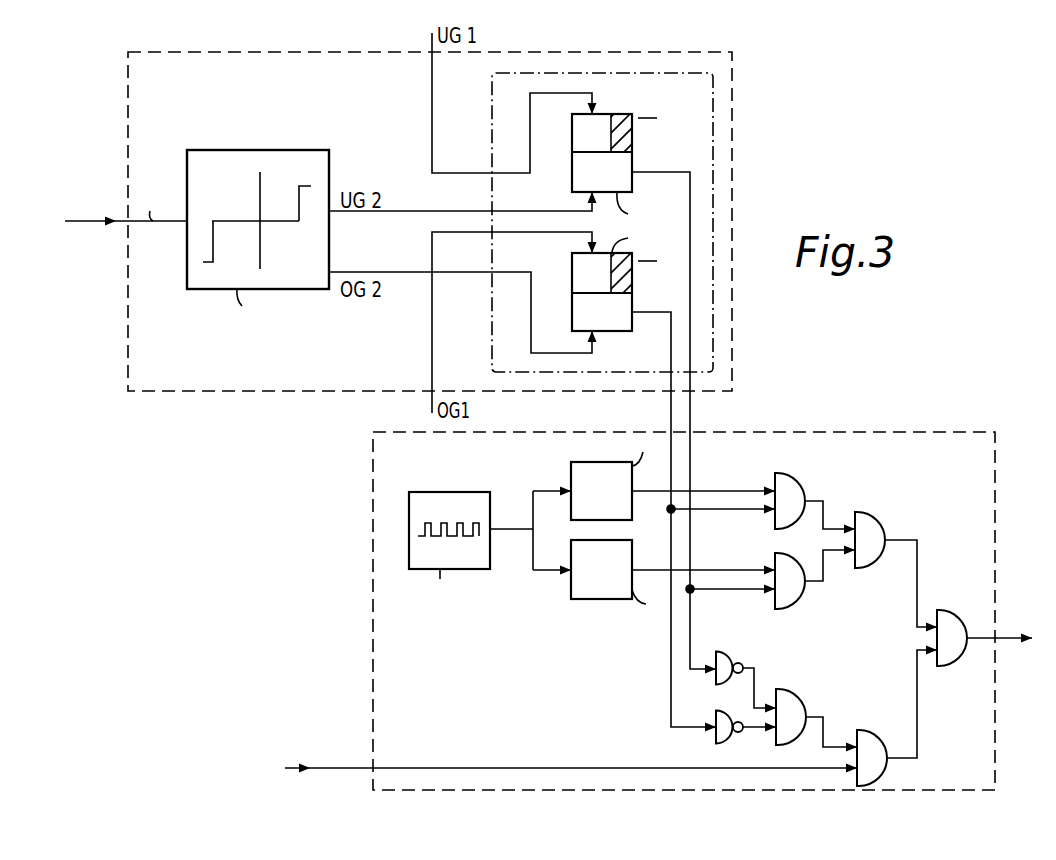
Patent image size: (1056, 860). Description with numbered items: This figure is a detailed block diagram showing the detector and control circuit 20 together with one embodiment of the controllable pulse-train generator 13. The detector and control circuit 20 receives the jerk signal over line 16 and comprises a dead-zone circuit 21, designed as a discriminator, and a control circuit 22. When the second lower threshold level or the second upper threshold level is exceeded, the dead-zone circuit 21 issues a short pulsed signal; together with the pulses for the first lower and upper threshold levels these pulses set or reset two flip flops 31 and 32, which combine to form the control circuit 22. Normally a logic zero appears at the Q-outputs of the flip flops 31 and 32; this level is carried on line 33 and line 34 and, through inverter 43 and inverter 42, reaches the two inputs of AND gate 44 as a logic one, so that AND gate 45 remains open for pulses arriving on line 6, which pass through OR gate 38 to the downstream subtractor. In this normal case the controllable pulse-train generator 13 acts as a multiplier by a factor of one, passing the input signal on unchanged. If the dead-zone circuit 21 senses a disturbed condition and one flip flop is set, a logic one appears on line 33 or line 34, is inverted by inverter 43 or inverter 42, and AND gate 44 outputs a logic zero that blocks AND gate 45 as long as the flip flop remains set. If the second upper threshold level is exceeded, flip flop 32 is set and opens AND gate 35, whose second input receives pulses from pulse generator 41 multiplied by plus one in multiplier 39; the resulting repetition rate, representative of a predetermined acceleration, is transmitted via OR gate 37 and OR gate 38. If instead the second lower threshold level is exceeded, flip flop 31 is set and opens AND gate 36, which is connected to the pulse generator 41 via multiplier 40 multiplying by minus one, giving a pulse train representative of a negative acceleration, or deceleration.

The detector and control circuit 20 is at (137, 100).
The dead-zone circuit 21 is at (231, 152).
The line 16 is at (82, 221).
The control circuit 22 is at (703, 102).
The flip flop 31 is at (572, 175).
The flip flop 32 is at (572, 314).
The line 33 is at (671, 410).
The line 34 is at (690, 410).
The controllable pulse-train generator 13 is at (995, 488).
The pulse generator 41 is at (420, 500).
The multiplier 39 is at (571, 470).
The multiplier 40 is at (571, 593).
The AND gate 35 is at (793, 489).
The AND gate 36 is at (793, 594).
The OR gate 37 is at (868, 522).
The OR gate 38 is at (952, 613).
The inverter 42 is at (730, 660).
The inverter 43 is at (730, 735).
The AND gate 44 is at (797, 708).
The AND gate 45 is at (876, 745).
The line 6 is at (342, 768).